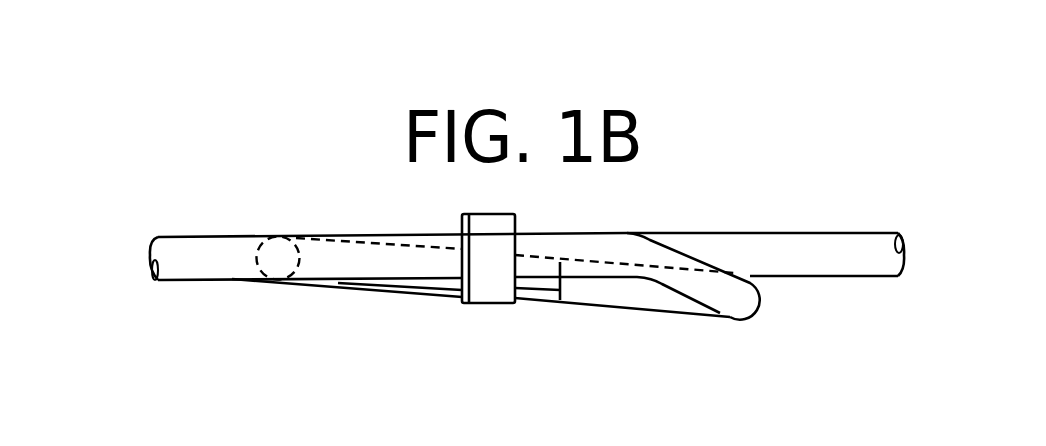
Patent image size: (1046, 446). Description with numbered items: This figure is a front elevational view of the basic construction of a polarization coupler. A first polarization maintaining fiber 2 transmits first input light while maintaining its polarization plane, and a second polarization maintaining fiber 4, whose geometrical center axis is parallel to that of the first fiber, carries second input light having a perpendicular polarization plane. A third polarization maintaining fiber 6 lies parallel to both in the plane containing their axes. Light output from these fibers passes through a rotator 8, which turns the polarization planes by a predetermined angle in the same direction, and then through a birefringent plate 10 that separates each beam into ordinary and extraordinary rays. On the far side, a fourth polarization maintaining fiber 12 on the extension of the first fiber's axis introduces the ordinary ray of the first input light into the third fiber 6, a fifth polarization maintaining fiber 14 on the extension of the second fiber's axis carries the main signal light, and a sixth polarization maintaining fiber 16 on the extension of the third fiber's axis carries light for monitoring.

The first polarization maintaining fiber 2 is at (235, 267).
The second polarization maintaining fiber 4 is at (195, 270).
The third polarization maintaining fiber 6 is at (390, 290).
The rotator 8 is at (460, 303).
The birefringent plate 10 is at (492, 292).
The fourth polarization maintaining fiber 12 is at (641, 303).
The fifth polarization maintaining fiber 14 is at (793, 268).
The sixth polarization maintaining fiber 16 is at (850, 263).